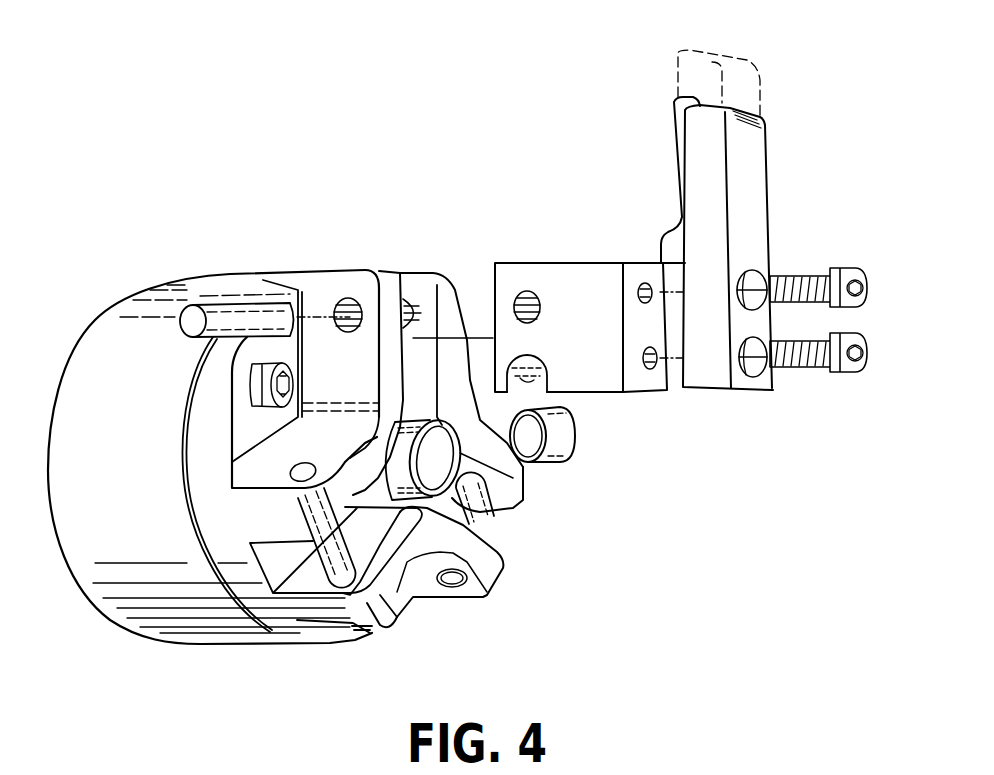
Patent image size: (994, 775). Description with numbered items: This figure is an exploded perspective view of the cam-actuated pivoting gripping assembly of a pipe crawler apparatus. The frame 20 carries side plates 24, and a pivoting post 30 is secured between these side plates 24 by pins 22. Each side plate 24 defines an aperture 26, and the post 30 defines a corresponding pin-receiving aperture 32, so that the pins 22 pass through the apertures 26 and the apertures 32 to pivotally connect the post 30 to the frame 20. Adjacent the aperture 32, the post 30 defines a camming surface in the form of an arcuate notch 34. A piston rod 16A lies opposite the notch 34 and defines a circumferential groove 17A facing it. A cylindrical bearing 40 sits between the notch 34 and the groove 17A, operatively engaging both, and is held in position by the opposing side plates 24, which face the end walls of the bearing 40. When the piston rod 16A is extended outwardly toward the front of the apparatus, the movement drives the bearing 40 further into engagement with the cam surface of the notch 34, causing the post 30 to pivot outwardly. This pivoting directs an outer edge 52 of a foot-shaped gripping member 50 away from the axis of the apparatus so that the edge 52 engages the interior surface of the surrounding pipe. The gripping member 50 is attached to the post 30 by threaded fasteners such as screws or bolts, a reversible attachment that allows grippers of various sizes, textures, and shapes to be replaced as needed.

The piston rod 16A is at (524, 481).
The circumferential groove 17A is at (368, 455).
The frame 20 is at (280, 442).
The pin 22 is at (209, 307).
The side plate 24 is at (273, 513).
The aperture 26 is at (335, 306).
The post 30 is at (612, 318).
The aperture 32 is at (513, 312).
The arcuate notch 34 is at (547, 374).
The cylindrical bearing 40 is at (575, 425).
The gripping member 50 is at (748, 163).
The outer edge 52 is at (683, 113).